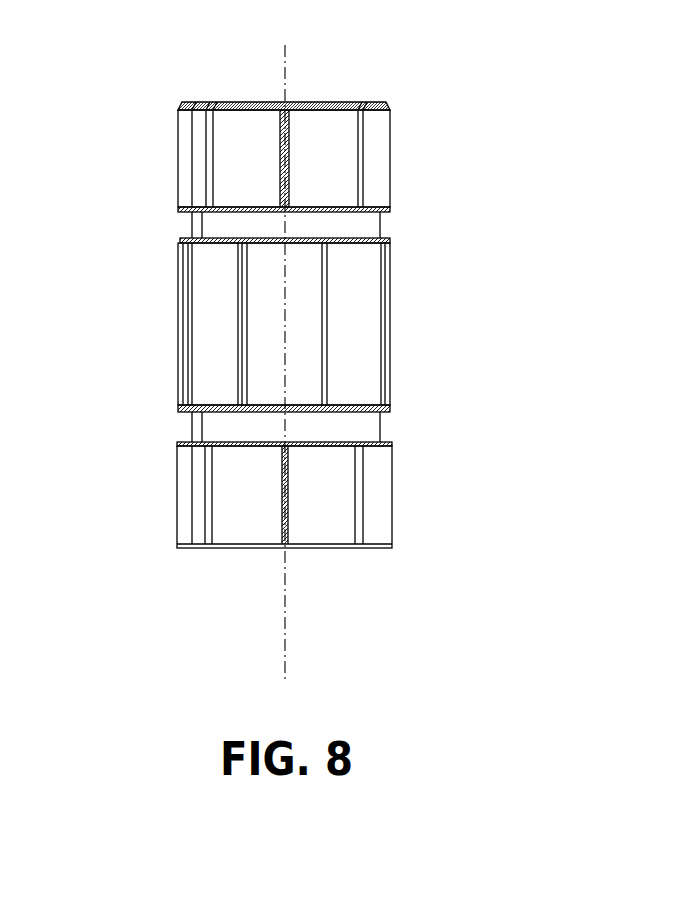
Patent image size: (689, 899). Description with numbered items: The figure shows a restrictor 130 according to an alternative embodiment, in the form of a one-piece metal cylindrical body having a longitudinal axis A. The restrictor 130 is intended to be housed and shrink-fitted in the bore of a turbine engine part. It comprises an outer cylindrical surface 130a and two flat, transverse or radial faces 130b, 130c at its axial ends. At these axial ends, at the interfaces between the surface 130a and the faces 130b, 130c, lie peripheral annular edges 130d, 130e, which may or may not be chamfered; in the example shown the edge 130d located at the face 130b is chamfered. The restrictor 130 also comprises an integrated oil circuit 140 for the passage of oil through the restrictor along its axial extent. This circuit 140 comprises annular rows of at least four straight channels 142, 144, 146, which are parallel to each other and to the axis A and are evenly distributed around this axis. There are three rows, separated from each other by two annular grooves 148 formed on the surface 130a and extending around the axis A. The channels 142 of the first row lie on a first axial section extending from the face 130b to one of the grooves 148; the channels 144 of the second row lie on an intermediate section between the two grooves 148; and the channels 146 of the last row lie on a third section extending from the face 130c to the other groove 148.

The restrictor 130 is at (309, 329).
The outer cylindrical surface 130a is at (309, 324).
The flat transverse face 130b is at (325, 102).
The flat transverse face 130c is at (373, 550).
The peripheral annular edge 130d is at (247, 116).
The peripheral annular edge 130e is at (242, 548).
The integrated oil circuit 140 is at (276, 540).
The channels of the first row 142 is at (280, 150).
The channels of the second row 144 is at (317, 333).
The channels of the last row 146 is at (357, 513).
The annular grooves 148 is at (188, 224).
The longitudinal axis A is at (290, 645).